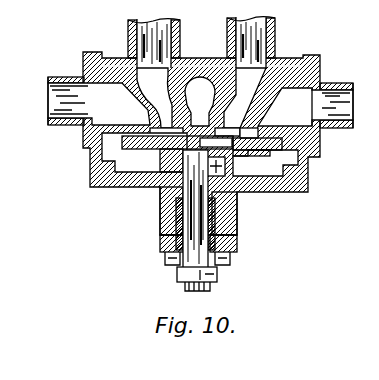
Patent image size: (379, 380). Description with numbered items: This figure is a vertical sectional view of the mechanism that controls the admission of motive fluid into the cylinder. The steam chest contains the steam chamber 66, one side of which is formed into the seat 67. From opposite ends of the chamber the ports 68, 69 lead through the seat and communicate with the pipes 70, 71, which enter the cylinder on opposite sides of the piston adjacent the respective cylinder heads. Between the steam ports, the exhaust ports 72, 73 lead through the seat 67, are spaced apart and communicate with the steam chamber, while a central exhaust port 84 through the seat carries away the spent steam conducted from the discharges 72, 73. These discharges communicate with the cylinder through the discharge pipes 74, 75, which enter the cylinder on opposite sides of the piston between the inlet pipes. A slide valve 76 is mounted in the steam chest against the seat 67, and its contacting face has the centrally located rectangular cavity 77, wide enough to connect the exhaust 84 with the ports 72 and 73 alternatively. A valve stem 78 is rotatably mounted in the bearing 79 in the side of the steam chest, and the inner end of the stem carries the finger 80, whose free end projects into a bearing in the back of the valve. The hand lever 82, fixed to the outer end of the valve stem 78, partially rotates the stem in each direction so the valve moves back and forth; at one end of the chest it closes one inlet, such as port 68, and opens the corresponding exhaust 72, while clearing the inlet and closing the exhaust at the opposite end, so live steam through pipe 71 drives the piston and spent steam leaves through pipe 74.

The steam chamber 66 is at (144, 152).
The seat 67 is at (171, 160).
The port 68 is at (348, 75).
The port 69 is at (68, 70).
The pipe 70 is at (308, 95).
The pipe 71 is at (99, 90).
The exhaust port 72 is at (245, 98).
The exhaust port 73 is at (150, 93).
The discharge pipe 74 is at (275, 38).
The discharge pipe 75 is at (180, 48).
The slide valve 76 is at (245, 150).
The rectangular cavity 77 is at (202, 146).
The valve stem 78 is at (237, 207).
The bearing 79 is at (160, 214).
The finger 80 is at (226, 170).
The hand lever 82 is at (215, 281).
The central exhaust port 84 is at (200, 101).